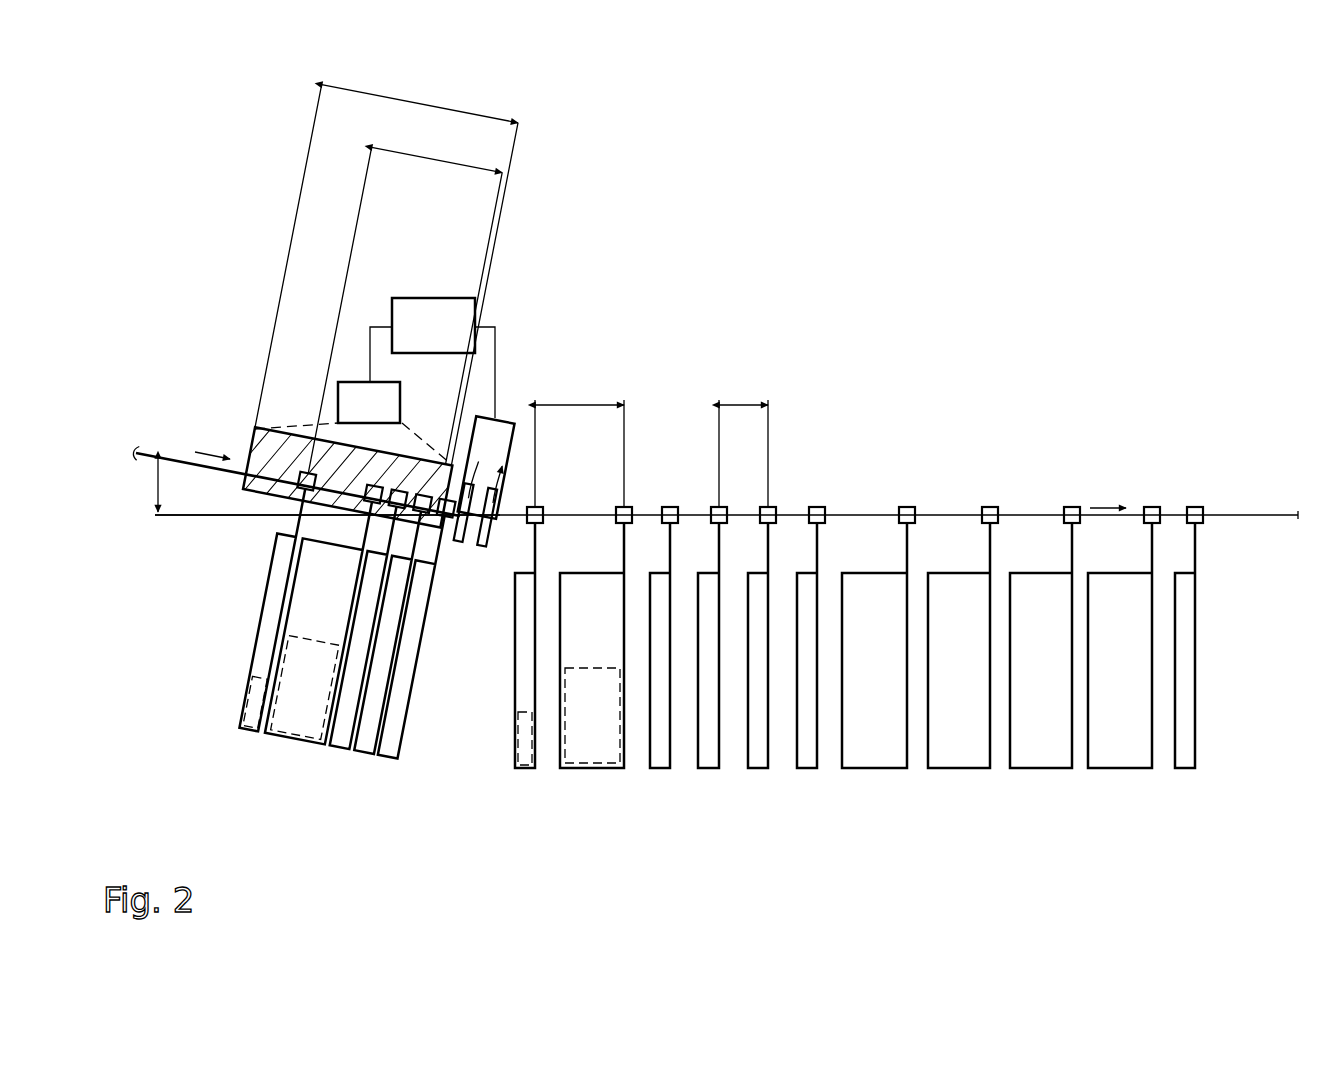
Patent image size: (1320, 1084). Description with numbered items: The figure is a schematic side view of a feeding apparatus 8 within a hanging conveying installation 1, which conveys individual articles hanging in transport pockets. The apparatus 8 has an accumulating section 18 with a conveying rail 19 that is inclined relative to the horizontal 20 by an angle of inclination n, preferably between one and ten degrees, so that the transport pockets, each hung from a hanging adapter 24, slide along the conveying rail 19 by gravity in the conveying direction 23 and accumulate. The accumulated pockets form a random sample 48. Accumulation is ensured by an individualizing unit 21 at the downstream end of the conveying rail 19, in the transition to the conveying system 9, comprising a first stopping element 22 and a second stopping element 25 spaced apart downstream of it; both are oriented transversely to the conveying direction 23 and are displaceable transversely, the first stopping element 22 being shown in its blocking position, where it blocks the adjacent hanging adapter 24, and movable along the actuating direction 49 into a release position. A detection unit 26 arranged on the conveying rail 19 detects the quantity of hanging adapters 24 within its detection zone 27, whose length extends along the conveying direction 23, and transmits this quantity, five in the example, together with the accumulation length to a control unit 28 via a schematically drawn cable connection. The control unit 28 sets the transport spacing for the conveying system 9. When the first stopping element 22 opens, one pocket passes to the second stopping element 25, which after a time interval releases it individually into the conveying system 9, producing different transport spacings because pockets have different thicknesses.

The hanging conveying installation 1 is at (723, 258).
The apparatus 8 is at (415, 274).
The conveying system 9 is at (857, 506).
The accumulating section 18 is at (239, 446).
The conveying rail 19 is at (178, 450).
The horizontal 20 is at (208, 517).
The individualizing unit 21 is at (492, 462).
The first stopping element 22 is at (455, 546).
The conveying direction 23 is at (196, 448).
The hanging adapter 24 is at (667, 503).
The second stopping element 25 is at (472, 548).
The detection unit 26 is at (350, 397).
The detection zone 27 is at (270, 440).
The control unit 28 is at (452, 312).
The random sample 48 is at (220, 698).
The actuating direction 49 is at (480, 452).